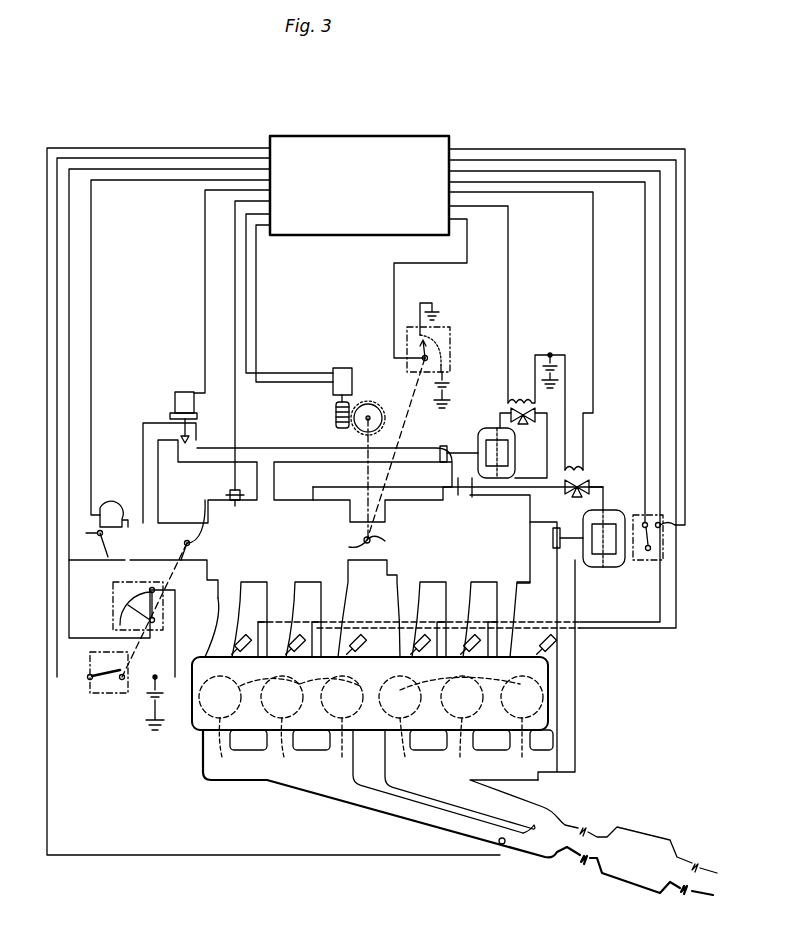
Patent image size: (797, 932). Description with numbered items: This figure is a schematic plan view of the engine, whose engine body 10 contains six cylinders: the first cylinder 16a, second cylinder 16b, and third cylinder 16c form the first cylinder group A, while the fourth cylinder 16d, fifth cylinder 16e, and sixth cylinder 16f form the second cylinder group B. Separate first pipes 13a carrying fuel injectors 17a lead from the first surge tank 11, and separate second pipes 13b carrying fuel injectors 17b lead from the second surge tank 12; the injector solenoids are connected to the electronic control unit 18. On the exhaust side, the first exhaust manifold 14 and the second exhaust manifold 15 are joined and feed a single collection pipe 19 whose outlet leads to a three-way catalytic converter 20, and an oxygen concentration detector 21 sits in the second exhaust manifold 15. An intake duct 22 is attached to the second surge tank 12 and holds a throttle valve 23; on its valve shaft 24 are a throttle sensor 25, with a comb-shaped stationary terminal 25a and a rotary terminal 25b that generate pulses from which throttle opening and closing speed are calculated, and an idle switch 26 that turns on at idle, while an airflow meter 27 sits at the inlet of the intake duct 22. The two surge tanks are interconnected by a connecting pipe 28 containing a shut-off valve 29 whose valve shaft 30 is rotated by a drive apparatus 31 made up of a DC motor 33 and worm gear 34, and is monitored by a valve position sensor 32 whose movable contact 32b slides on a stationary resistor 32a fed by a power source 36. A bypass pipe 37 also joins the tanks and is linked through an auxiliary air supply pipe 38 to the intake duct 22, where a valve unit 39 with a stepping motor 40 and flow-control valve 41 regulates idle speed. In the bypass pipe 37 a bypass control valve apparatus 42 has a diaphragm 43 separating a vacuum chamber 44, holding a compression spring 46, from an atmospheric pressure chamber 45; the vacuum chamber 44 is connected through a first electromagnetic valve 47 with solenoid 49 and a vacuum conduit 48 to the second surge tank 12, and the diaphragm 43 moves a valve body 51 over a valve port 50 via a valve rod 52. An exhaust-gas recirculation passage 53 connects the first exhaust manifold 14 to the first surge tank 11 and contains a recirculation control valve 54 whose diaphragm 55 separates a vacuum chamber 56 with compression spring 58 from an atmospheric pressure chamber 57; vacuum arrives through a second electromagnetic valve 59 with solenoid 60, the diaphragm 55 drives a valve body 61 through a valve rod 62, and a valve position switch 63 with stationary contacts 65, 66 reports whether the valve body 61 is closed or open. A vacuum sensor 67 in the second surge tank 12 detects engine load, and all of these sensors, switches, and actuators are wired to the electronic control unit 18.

The engine body 10 is at (190, 722).
The first surge tank 11 is at (530, 500).
The second surge tank 12 is at (292, 495).
The first pipes 13a is at (390, 584).
The second pipes 13b is at (321, 588).
The first exhaust manifold 14 is at (528, 793).
The second exhaust manifold 15 is at (399, 820).
The No. 1 cylinder 16a is at (516, 728).
The No. 2 cylinder 16b is at (459, 728).
The No. 3 cylinder 16c is at (400, 728).
The No. 4 cylinder 16d is at (336, 728).
The No. 5 cylinder 16e is at (282, 728).
The No. 6 cylinder 16f is at (220, 728).
The fuel injectors 17a is at (426, 637).
The fuel injectors 17b is at (236, 640).
The electronic control unit 18 is at (430, 134).
The collection pipe 19 is at (585, 826).
The three-way catalytic converter 20 is at (662, 838).
The oxygen concentration detector 21 is at (502, 845).
The intake duct 22 is at (172, 519).
The throttle valve 23 is at (205, 499).
The valve shaft 24 is at (184, 543).
The throttle sensor 25 is at (109, 611).
The comb-shaped stationary terminal 25a is at (113, 588).
The rotary terminal 25b is at (118, 624).
The idle switch 26 is at (96, 698).
The airflow meter 27 is at (114, 506).
The connecting pipe 28 is at (384, 566).
The shut-off valve 29 is at (383, 548).
The valve shaft 30 is at (348, 546).
The drive apparatus 31 is at (345, 364).
The valve position sensor 32 is at (450, 332).
The stationary resistor 32a is at (446, 352).
The movable contact 32b is at (406, 350).
The DC motor 33 is at (334, 388).
The worm gear 34 is at (336, 422).
The power source 36 is at (452, 388).
The bypass pipe 37 is at (380, 411).
The auxiliary air supply pipe 38 is at (210, 445).
The valve unit 39 is at (172, 392).
The stepping motor 40 is at (170, 413).
The flow-control valve 41 is at (182, 446).
The bypass control valve apparatus 42 is at (492, 430).
The diaphragm 43 is at (510, 413).
The vacuum chamber 44 is at (507, 453).
The atmospheric pressure chamber 45 is at (479, 438).
The compression spring 46 is at (523, 445).
The first electromagnetic valve 47 is at (556, 405).
The vacuum conduit 48 is at (426, 486).
The solenoid 49 is at (522, 374).
The valve port 50 is at (458, 497).
The valve body 51 is at (450, 442).
The valve rod 52 is at (472, 498).
The exhaust-gas recirculation passage 53 is at (578, 701).
The recirculation control valve 54 is at (600, 490).
The diaphragm 55 is at (600, 568).
The vacuum chamber 56 is at (611, 605).
The atmospheric pressure chamber 57 is at (575, 560).
The compression spring 58 is at (615, 565).
The second electromagnetic valve 59 is at (596, 476).
The solenoid 60 is at (572, 466).
The valve body 61 is at (553, 538).
The valve rod 62 is at (564, 507).
The valve position switch 63 is at (659, 567).
The stationary contact 65 is at (642, 520).
The stationary contact 66 is at (675, 523).
The vacuum sensor 67 is at (236, 488).